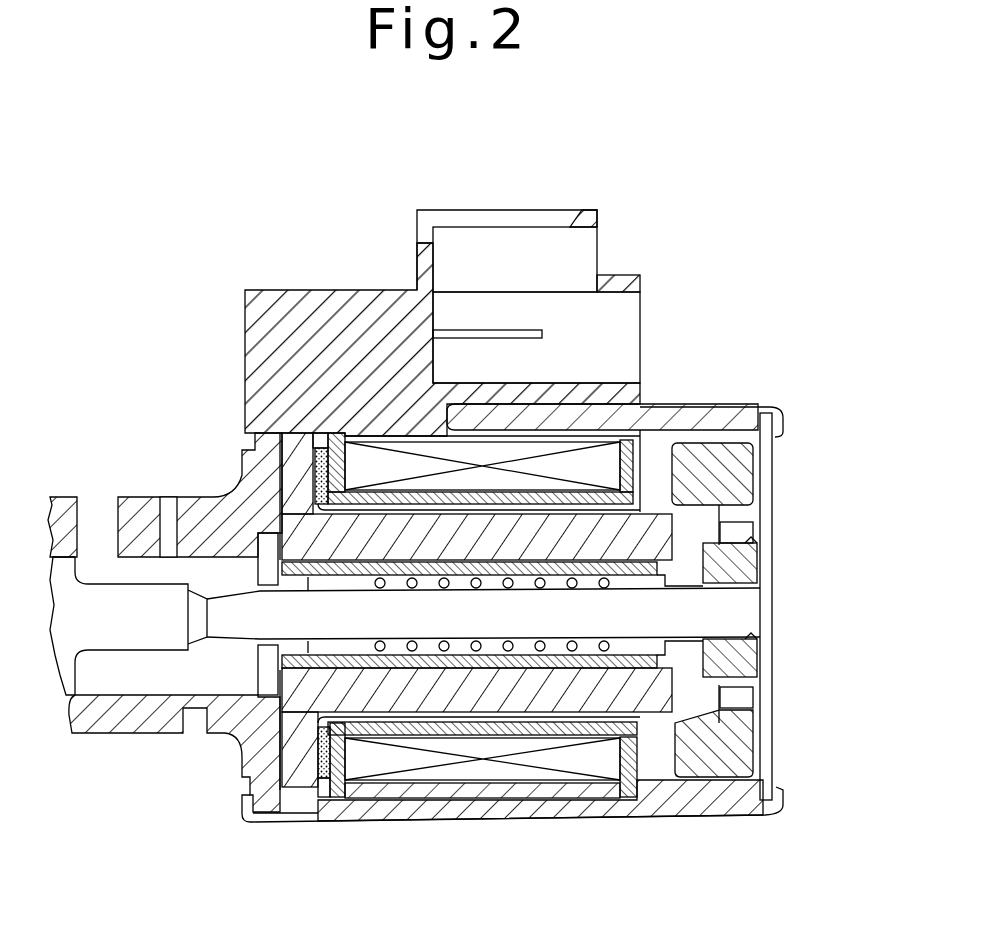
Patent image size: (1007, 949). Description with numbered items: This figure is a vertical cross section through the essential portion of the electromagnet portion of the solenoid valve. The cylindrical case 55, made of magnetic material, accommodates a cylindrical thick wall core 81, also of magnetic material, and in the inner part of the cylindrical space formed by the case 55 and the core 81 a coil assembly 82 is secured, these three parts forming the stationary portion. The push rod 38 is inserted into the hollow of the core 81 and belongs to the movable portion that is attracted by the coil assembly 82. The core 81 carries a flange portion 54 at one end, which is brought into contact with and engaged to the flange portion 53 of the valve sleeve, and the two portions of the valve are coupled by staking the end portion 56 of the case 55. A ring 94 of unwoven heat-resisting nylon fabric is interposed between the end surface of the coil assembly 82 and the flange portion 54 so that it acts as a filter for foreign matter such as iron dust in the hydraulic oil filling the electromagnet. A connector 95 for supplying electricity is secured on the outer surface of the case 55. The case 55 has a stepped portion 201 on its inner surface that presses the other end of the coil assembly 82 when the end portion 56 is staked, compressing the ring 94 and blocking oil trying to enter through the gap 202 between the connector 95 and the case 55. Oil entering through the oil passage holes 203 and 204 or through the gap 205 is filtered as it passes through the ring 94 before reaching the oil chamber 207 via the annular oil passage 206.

The push rod 38 is at (522, 630).
The flange portion 53 is at (278, 535).
The flange portion 54 is at (290, 447).
The case 55 is at (686, 818).
The end portion 56 is at (244, 820).
The core 81 is at (418, 698).
The coil assembly 82 is at (580, 765).
The ring 94 is at (352, 435).
The connector 95 is at (392, 293).
The stepped portion 201 is at (625, 425).
The gap 202 is at (567, 383).
The oil passage hole 203 is at (168, 510).
The oil passage hole 204 is at (240, 480).
The gap 205 is at (320, 440).
The annular oil passage 206 is at (598, 518).
The oil chamber 207 is at (702, 520).